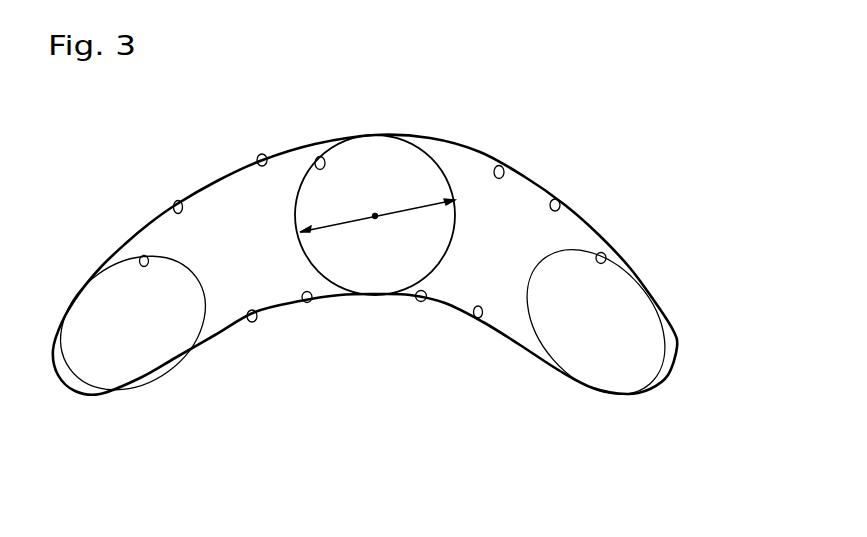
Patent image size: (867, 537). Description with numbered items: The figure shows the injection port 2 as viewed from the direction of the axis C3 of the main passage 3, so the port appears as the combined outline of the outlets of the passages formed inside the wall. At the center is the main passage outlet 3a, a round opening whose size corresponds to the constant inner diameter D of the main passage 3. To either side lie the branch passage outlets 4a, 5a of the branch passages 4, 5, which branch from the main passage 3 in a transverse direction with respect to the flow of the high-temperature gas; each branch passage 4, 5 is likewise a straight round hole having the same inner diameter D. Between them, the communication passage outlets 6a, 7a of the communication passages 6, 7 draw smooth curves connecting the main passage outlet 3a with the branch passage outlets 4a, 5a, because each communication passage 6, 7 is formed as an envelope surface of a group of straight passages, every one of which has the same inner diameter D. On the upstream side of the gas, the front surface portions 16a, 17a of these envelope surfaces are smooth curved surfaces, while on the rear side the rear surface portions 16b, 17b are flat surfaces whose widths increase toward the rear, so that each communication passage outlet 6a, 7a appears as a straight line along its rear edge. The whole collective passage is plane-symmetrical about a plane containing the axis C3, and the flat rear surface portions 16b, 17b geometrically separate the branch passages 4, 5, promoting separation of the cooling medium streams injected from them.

The injection port 2 is at (457, 152).
The main passage 3 is at (390, 160).
The main passage outlet 3a is at (322, 160).
The branch passage 4 is at (632, 321).
The branch passage outlet 4a is at (612, 258).
The branch passage 5 is at (100, 322).
The branch passage outlet 5a is at (144, 256).
The communication passage 6 is at (512, 207).
The communication passage outlet 6a is at (566, 208).
The communication passage 7 is at (233, 202).
The communication passage outlet 7a is at (178, 203).
The front surface portion 16a is at (505, 169).
The rear surface portion 16b is at (422, 302).
The front surface portion 17a is at (260, 157).
The rear surface portion 17b is at (309, 302).
The axis of the main passage C3 is at (375, 219).
The inner diameter D is at (402, 213).